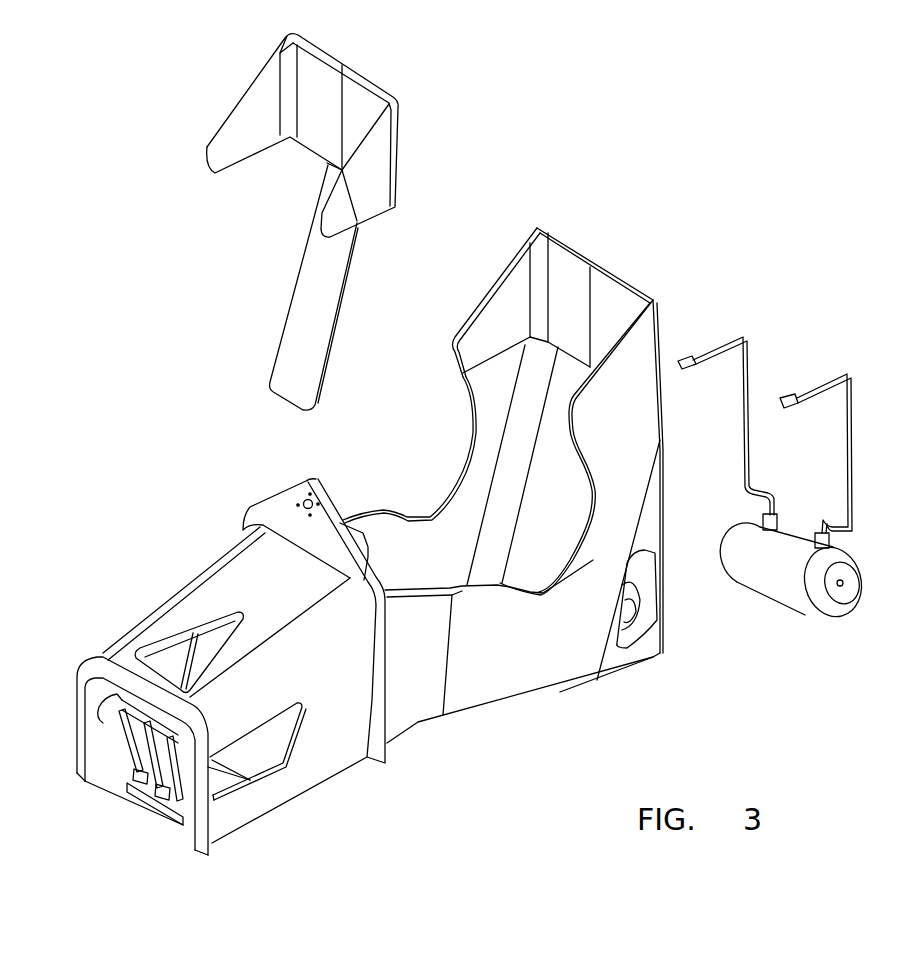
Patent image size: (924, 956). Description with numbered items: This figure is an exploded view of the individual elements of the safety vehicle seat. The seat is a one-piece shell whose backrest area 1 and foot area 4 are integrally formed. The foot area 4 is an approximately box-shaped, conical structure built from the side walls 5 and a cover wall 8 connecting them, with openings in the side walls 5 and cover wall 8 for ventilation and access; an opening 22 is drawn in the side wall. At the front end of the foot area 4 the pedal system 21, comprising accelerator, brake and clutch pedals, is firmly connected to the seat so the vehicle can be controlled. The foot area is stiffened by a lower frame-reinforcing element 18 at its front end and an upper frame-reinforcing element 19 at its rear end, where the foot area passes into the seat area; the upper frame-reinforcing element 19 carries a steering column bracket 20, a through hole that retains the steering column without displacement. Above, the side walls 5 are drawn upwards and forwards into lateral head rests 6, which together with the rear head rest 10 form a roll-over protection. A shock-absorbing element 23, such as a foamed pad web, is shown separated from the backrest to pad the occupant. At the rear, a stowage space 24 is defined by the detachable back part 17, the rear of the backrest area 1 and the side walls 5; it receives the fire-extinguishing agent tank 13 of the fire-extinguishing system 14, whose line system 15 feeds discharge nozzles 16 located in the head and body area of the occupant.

The backrest area 1 is at (553, 407).
The foot area 4 is at (152, 572).
The side walls 5 is at (500, 662).
The lateral head rests 6 is at (448, 345).
The cover wall 8 is at (297, 597).
The rear head rest 10 is at (545, 232).
The fire-extinguishing agent tank 13 is at (850, 585).
The fire-extinguishing system 14 is at (836, 481).
The line system 15 is at (852, 450).
The discharge nozzles 16 is at (681, 362).
The back part 17 is at (637, 653).
The lower frame-reinforcing element 18 is at (210, 850).
The upper frame-reinforcing element 19 is at (387, 753).
The steering column bracket 20 is at (303, 504).
The pedal system 21 is at (147, 797).
The side flap opening 22 is at (263, 752).
The shock-absorbing element 23 is at (340, 77).
The stowage space 24 is at (640, 603).